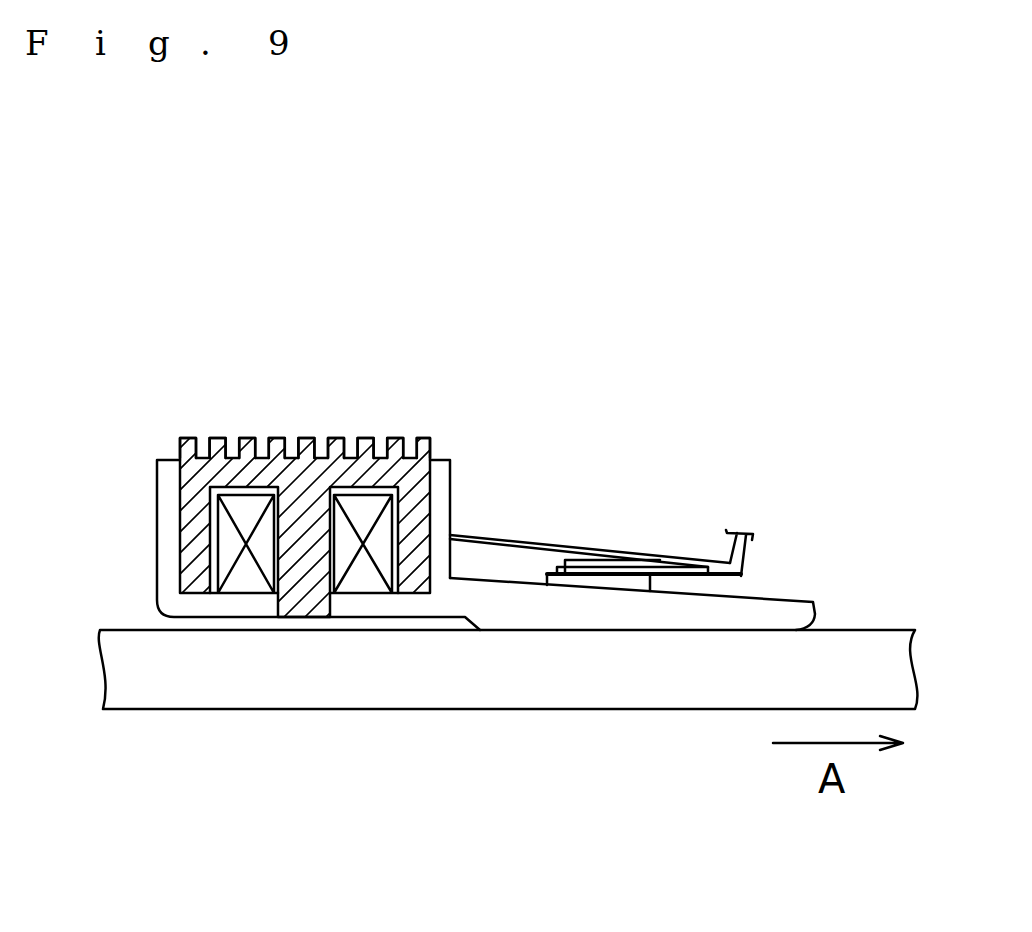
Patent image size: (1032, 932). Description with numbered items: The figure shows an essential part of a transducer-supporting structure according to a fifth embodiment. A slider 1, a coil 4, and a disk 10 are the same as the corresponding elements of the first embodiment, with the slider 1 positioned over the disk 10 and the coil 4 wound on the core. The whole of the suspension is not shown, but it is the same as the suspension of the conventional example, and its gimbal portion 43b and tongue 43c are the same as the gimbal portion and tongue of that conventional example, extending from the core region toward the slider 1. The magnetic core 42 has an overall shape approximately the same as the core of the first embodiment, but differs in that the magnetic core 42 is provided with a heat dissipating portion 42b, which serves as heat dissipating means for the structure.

The slider 1 is at (773, 600).
The coil 4 is at (248, 517).
The disk 10 is at (437, 710).
The magnetic core 42 is at (452, 461).
The heat dissipating portion 42b is at (352, 440).
The gimbal portion 43b is at (578, 547).
The tongue 43c is at (640, 558).